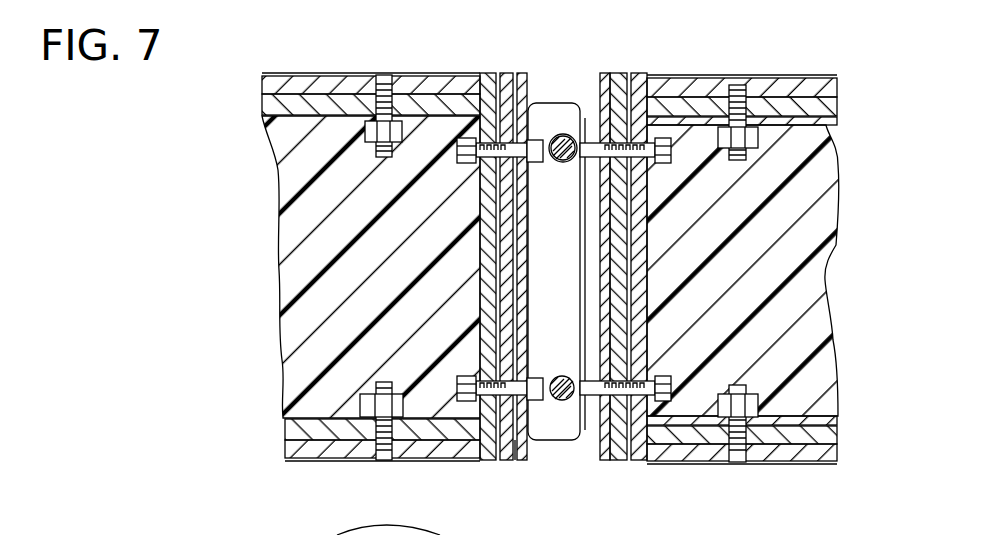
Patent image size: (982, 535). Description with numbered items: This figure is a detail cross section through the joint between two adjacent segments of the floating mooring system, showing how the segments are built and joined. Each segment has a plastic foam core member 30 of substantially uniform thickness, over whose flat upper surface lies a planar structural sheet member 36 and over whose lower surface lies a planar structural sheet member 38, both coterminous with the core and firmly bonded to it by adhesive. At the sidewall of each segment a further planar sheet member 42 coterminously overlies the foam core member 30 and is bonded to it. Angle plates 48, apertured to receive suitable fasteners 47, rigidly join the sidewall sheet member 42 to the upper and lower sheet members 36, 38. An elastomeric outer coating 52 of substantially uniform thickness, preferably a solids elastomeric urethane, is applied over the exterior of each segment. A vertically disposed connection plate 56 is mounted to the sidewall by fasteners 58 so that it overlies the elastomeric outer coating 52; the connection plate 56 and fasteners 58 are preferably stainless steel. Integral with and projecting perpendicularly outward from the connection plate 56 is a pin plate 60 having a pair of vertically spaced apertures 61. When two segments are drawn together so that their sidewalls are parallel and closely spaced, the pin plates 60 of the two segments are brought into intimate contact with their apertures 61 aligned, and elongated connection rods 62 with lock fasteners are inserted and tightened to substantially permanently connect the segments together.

The plastic foam core member 30 is at (399, 270).
The planar structural sheet member 36 is at (836, 78).
The planar structural sheet member 38 is at (324, 450).
The sheet member 42 is at (614, 295).
The fasteners 47 is at (738, 82).
The angle plates 48 is at (655, 364).
The elastomeric outer coating 52 is at (333, 75).
The connection plate 56 is at (533, 462).
The fasteners 58 is at (537, 103).
The pin plate 60 is at (563, 113).
The apertures 61 is at (557, 163).
The connection rods 62 is at (560, 376).